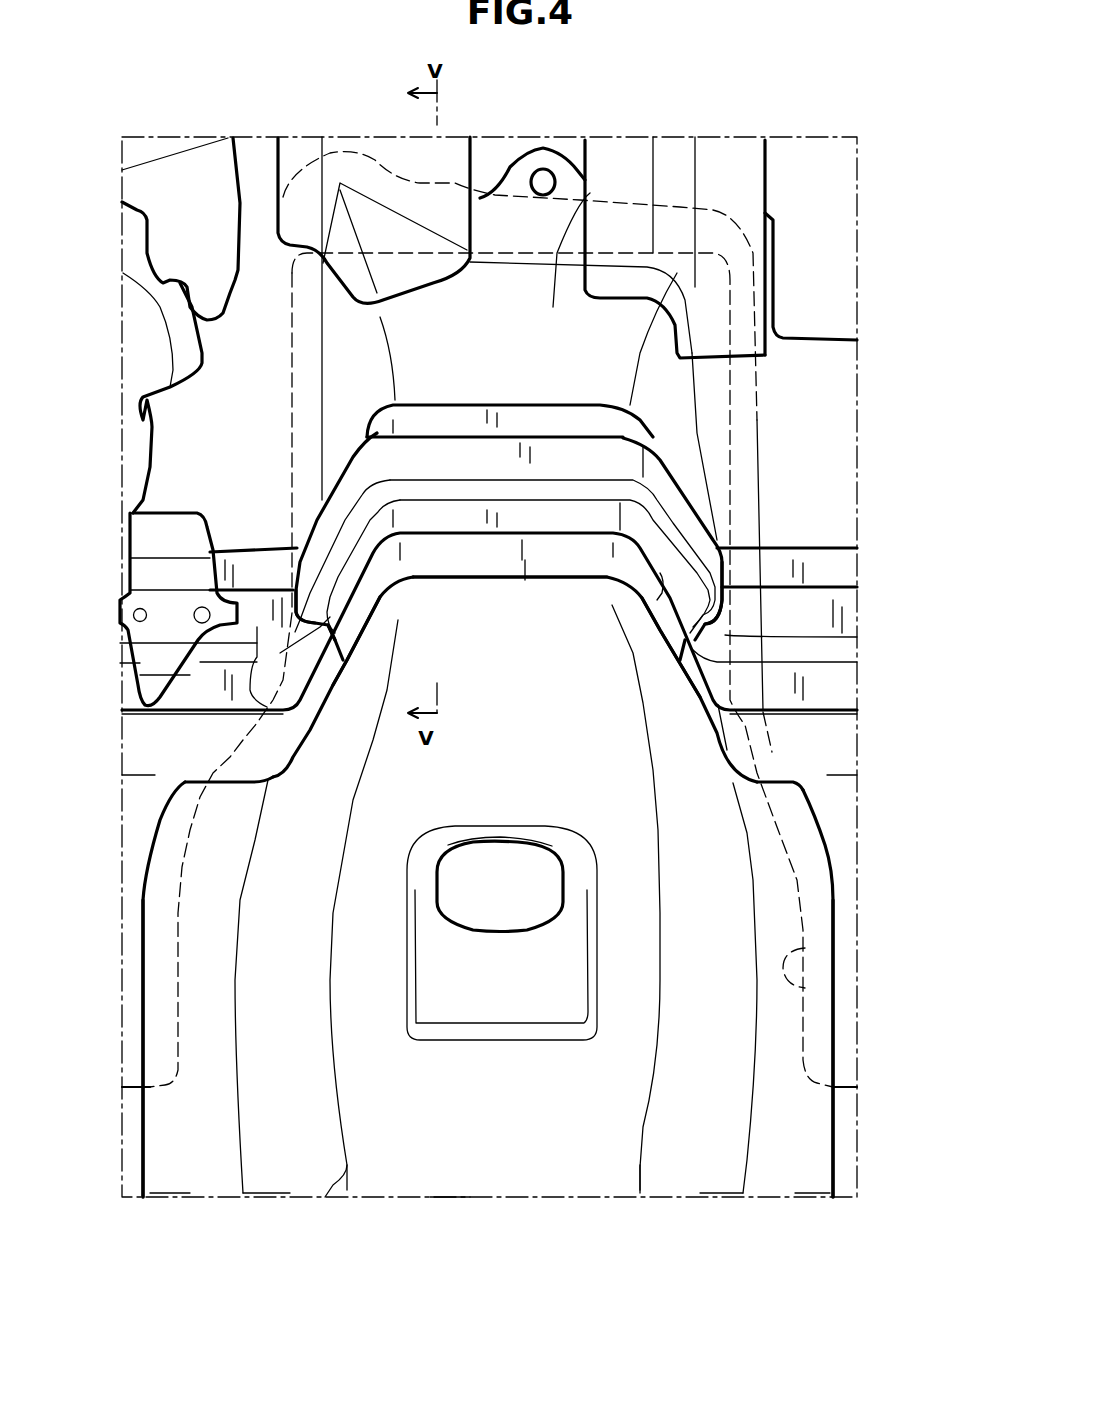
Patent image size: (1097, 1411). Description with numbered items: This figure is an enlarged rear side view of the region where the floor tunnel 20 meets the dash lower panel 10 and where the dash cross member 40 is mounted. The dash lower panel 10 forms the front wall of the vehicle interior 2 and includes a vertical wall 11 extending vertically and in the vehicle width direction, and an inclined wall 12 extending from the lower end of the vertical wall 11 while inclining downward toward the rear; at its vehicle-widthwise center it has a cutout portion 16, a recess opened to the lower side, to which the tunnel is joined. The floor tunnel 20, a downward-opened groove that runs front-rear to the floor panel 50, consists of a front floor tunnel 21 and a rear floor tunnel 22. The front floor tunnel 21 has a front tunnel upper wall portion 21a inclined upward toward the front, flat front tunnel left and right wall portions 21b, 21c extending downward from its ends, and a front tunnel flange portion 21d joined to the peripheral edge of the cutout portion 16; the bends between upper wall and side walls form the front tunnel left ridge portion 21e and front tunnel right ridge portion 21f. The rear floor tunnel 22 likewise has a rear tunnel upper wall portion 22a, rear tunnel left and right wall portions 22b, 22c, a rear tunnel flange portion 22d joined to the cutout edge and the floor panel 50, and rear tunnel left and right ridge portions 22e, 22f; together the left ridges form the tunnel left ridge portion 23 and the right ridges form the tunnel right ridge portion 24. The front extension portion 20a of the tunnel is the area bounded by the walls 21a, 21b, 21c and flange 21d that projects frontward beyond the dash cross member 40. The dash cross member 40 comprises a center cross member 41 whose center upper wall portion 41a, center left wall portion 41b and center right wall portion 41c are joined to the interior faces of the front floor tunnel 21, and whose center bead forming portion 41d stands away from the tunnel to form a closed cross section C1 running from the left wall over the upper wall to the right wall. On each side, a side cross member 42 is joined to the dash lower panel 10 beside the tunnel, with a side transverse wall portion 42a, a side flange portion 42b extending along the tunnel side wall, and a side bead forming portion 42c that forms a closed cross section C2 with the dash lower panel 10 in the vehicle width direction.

The vehicle interior 2 is at (495, 1137).
The dash lower panel 10 is at (749, 115).
The vertical wall 11 is at (187, 230).
The inclined wall 12 is at (147, 820).
The cutout portion 16 is at (803, 990).
The floor tunnel 20 is at (536, 936).
The front extension portion 20a is at (553, 305).
The front floor tunnel 21 is at (712, 762).
The front tunnel upper wall portion 21a is at (570, 557).
The front tunnel left wall portion 21b is at (347, 630).
The front tunnel right wall portion 21c is at (687, 637).
The front tunnel flange portion 21d is at (513, 217).
The front tunnel left ridge portion 21e is at (393, 353).
The front tunnel right ridge portion 21f is at (640, 370).
The rear floor tunnel 22 is at (505, 1212).
The rear tunnel upper wall portion 22a is at (455, 1180).
The rear tunnel left wall portion 22b is at (290, 1183).
The rear tunnel right wall portion 22c is at (695, 1180).
The rear tunnel flange portion 22d is at (197, 1180).
The rear tunnel left ridge portion 22e is at (347, 1165).
The rear tunnel right ridge portion 22f is at (640, 1165).
The tunnel left ridge portion 23 is at (442, 358).
The tunnel right ridge portion 24 is at (793, 339).
The dash cross member 40 is at (514, 585).
The center cross member 41 is at (616, 523).
The center upper wall portion 41a is at (513, 517).
The center left wall portion 41b is at (353, 573).
The center right wall portion 41c is at (660, 573).
The center bead forming portion 41d is at (507, 450).
The side cross member 42 is at (514, 629).
The side transverse wall portion 42a is at (197, 710).
The side flange portion 42b is at (347, 690).
The side bead forming portion 42c is at (815, 605).
The floor panel 50 is at (137, 1143).
The closed cross section C1 is at (510, 422).
The closed cross section C2 is at (588, 675).